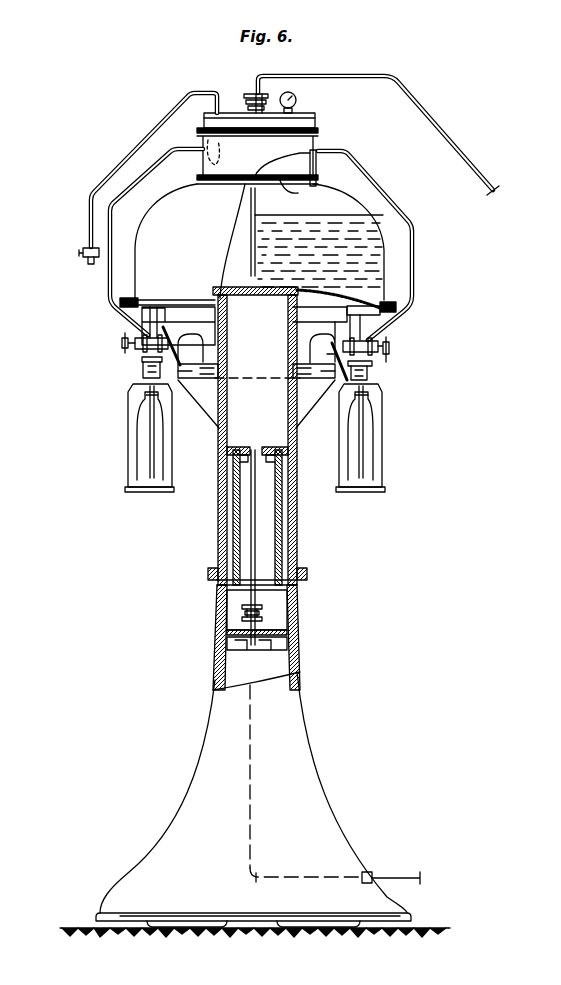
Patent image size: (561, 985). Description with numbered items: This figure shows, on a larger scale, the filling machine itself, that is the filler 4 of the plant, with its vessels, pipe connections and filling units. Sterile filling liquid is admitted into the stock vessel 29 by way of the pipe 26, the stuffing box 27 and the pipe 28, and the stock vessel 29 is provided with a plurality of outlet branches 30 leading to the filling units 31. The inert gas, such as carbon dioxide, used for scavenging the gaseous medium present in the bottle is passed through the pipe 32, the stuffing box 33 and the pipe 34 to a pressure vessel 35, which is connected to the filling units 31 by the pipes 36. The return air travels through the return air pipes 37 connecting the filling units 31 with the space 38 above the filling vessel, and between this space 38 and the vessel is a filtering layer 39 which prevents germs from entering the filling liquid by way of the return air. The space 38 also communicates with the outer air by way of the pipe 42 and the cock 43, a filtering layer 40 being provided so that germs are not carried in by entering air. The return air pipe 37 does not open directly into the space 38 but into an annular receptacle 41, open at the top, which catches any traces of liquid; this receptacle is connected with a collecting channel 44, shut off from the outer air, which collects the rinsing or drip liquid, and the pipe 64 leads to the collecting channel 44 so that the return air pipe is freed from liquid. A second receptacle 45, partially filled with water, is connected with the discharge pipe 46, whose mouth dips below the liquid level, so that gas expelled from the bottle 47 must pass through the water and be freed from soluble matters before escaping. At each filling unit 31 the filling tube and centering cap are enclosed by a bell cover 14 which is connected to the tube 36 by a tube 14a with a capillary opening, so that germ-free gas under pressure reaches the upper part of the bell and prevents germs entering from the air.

The filler 4 is at (300, 737).
The bell cover 14 is at (130, 441).
The tube 14a is at (143, 368).
The pipe 26 is at (438, 121).
The stuffing box 27 is at (262, 96).
The pipe 28 is at (262, 213).
The stock vessel 29 is at (386, 260).
The outlet branches 30 is at (140, 313).
The filling units 31 is at (143, 347).
The pipe 32 is at (389, 877).
The stuffing box 33 is at (262, 613).
The pipe 34 is at (254, 506).
The pressure vessel 35 is at (257, 488).
The pipes 36 is at (251, 322).
The return air pipes 37 is at (140, 191).
The space 38 is at (282, 165).
The filtering layer 39 is at (290, 189).
The filtering layer 40 is at (318, 122).
The annular receptacle 41 is at (318, 160).
The pipe 42 is at (150, 138).
The cock 43 is at (88, 262).
The collecting channel 44 is at (256, 371).
The second receptacle 45 is at (256, 403).
The discharge pipe 46 is at (255, 351).
The bottle 47 is at (372, 434).
The pipe 64 is at (323, 355).